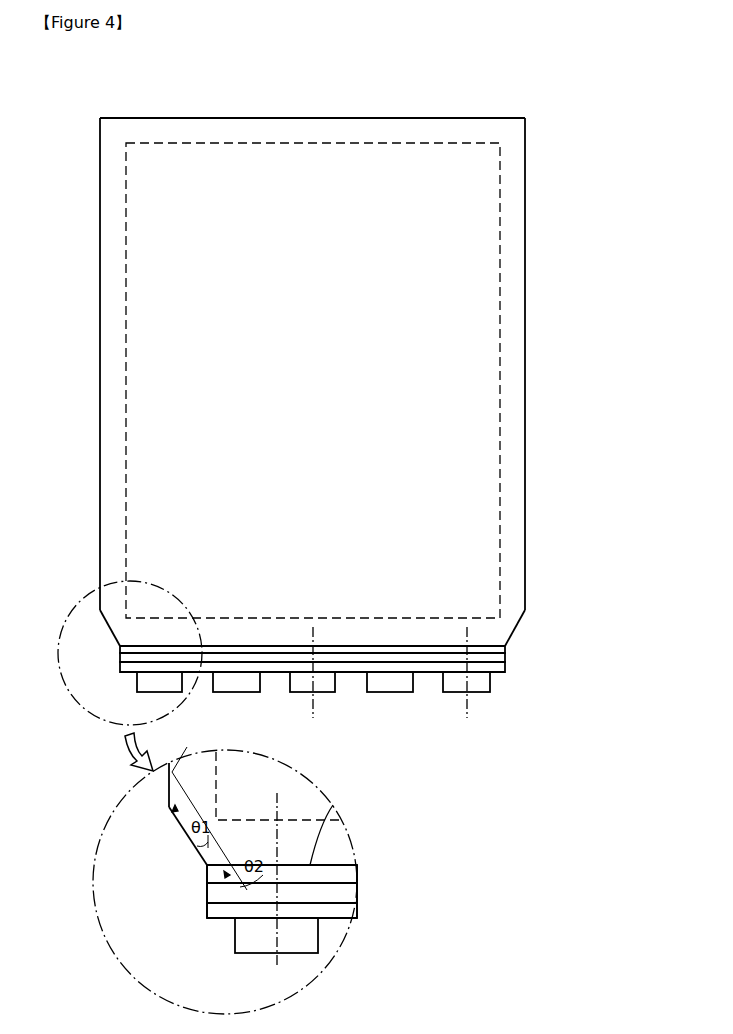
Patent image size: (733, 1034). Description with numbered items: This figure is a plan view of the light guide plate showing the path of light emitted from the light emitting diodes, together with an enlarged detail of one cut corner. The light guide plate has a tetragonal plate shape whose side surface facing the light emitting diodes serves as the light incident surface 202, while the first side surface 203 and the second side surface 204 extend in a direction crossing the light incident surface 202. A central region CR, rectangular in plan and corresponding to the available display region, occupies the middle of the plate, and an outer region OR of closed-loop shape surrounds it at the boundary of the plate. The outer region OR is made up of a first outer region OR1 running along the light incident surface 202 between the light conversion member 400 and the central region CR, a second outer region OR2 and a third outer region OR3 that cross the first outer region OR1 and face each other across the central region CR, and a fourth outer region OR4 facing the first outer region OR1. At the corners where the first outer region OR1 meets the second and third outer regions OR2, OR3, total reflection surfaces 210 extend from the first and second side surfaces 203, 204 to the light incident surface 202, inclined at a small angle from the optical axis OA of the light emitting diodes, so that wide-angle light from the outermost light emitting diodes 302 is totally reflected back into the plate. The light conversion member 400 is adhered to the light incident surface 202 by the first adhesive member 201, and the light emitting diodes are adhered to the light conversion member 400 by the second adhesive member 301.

The first adhesive member 201 is at (505, 647).
The light incident surface 202 is at (333, 805).
The first side surface 203 is at (525, 350).
The second side surface 204 is at (100, 350).
The total reflection surfaces 210 is at (105, 632).
The second adhesive member 301 is at (505, 668).
The outermost light emitting diodes 302 is at (480, 683).
The light conversion member 400 is at (505, 657).
The central region CR is at (500, 243).
The outer region OR is at (335, 842).
The first outer region OR1 is at (388, 633).
The second outer region OR2 is at (525, 493).
The third outer region OR3 is at (103, 492).
The fourth outer region OR4 is at (317, 130).
The optical axis OA is at (389, 685).